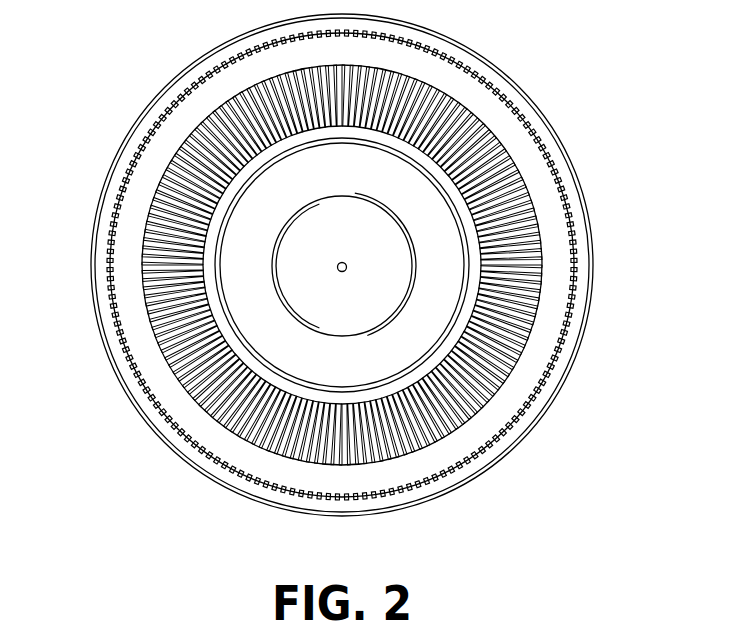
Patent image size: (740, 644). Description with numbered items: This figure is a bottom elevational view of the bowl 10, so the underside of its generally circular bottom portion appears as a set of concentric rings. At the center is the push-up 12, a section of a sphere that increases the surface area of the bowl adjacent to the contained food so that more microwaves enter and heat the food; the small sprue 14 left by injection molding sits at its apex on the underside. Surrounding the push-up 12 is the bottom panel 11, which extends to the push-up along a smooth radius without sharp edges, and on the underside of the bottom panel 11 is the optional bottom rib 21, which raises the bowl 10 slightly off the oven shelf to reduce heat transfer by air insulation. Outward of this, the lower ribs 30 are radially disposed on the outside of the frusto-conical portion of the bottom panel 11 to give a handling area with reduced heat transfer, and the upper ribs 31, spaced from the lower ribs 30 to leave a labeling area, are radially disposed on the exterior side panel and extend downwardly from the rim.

The bowl 10 is at (150, 162).
The bottom panel 11 is at (447, 307).
The push-up 12 is at (360, 240).
The sprue 14 is at (347, 270).
The bottom rib 21 is at (342, 387).
The lower ribs 30 is at (525, 275).
The upper ribs 31 is at (513, 428).